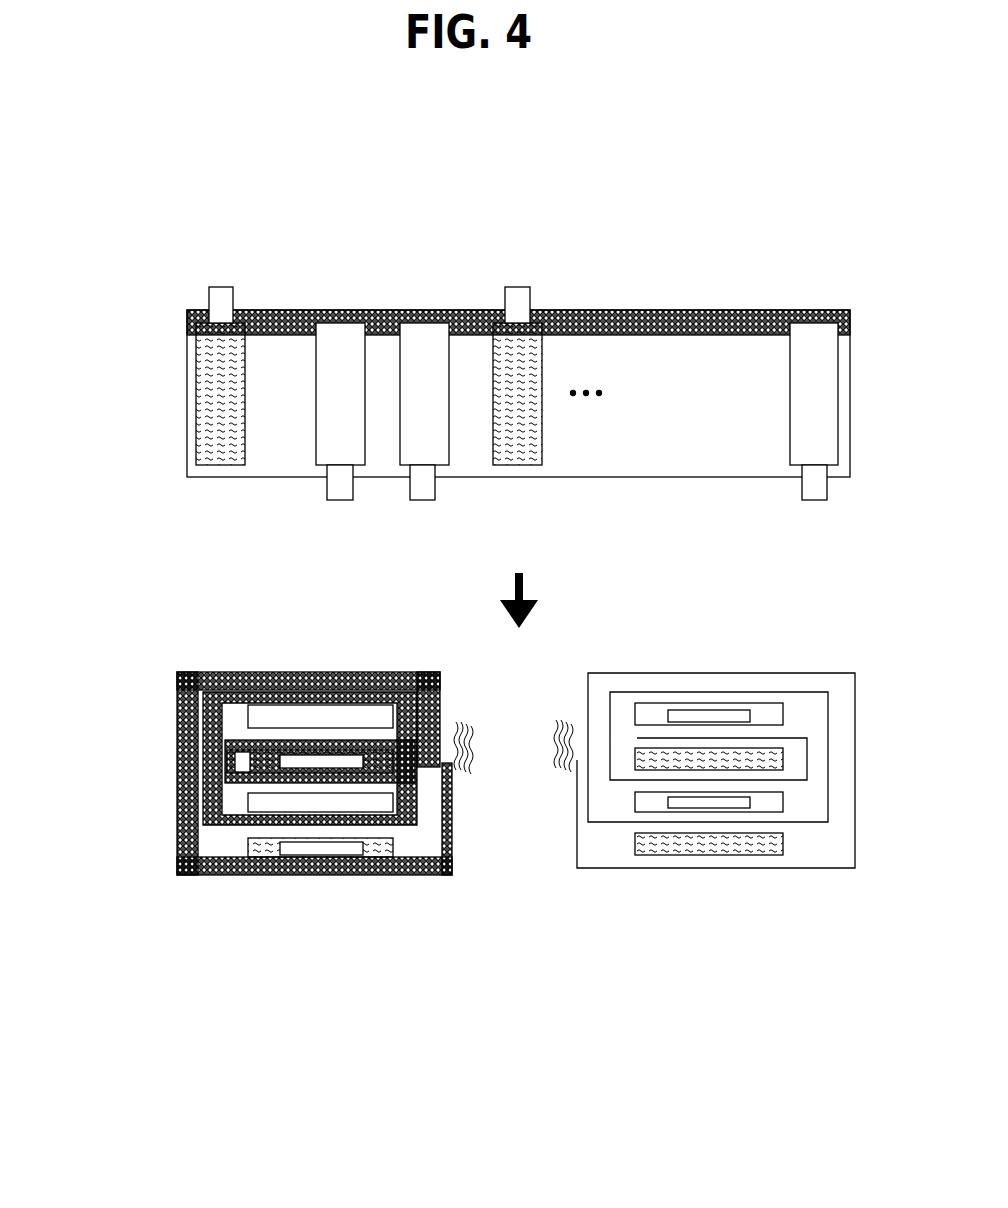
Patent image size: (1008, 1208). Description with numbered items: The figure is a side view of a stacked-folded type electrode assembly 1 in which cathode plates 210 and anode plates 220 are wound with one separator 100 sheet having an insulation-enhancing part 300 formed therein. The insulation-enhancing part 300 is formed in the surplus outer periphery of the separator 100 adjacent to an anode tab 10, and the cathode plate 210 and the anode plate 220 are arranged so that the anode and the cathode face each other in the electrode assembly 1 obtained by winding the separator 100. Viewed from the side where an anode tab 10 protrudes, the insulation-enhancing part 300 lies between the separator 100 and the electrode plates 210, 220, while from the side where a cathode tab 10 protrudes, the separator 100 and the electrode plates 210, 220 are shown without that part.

The electrode assembly 1 is at (462, 606).
The anode tab 10 is at (553, 636).
The separator 100 is at (518, 635).
The cathode plate 210 is at (519, 567).
The anode plate 220 is at (462, 615).
The insulation-enhancing part 300 is at (456, 525).